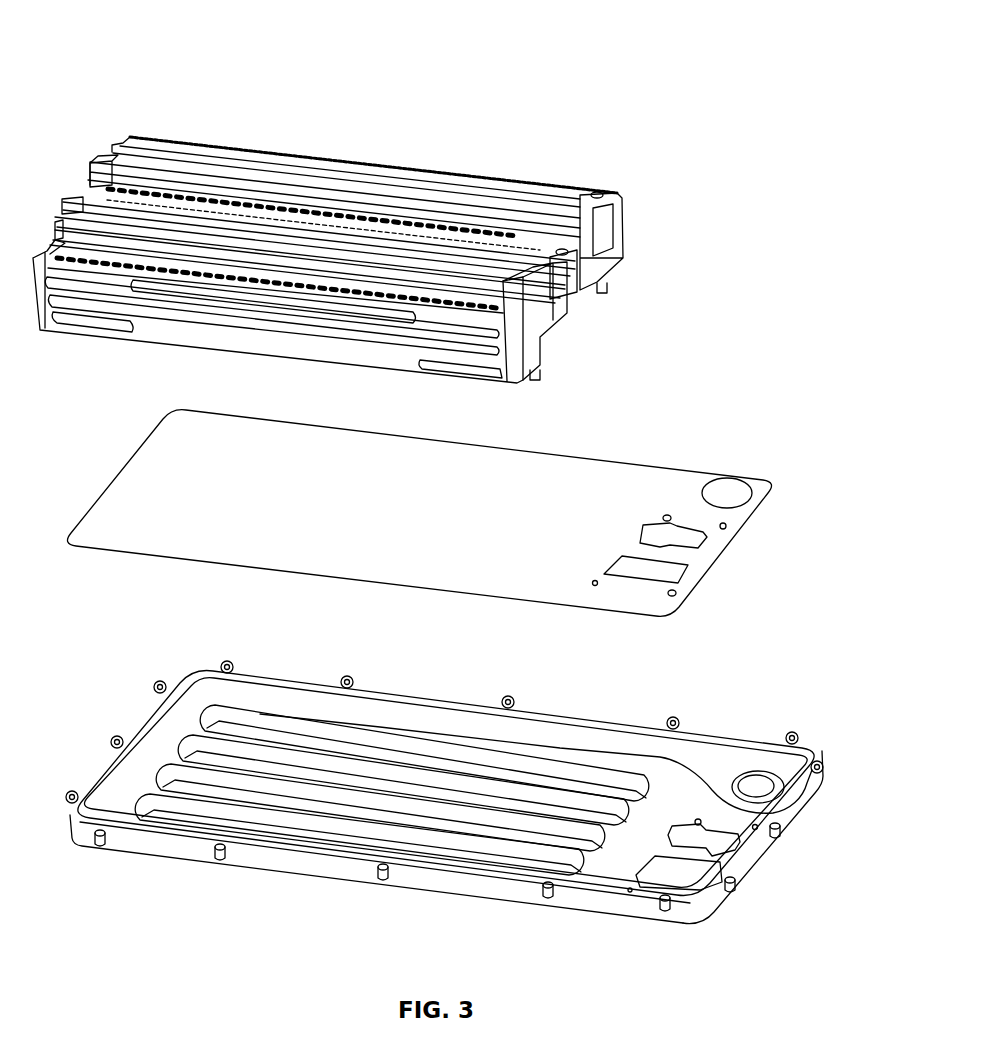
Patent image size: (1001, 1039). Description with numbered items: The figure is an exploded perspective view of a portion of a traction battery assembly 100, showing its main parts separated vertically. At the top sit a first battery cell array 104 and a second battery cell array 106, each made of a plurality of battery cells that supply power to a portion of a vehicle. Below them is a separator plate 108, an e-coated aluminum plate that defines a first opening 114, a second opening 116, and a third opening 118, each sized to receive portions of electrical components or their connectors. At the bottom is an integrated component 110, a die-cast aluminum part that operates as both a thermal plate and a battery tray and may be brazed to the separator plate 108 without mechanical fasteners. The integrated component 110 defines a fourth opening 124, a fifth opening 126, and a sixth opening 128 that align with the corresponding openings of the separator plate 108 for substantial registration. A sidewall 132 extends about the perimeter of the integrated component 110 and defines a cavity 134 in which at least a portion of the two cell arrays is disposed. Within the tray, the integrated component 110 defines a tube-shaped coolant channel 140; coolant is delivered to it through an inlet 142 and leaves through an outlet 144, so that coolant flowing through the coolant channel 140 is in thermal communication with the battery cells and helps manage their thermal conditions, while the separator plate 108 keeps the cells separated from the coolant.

The traction battery assembly 100 is at (150, 75).
The first battery cell array 104 is at (623, 222).
The second battery cell array 106 is at (565, 333).
The separator plate 108 is at (673, 465).
The integrated component 110 is at (720, 727).
The first opening 114 is at (730, 478).
The second opening 116 is at (703, 538).
The third opening 118 is at (677, 582).
The fourth opening 124 is at (812, 798).
The fifth opening 126 is at (762, 858).
The sixth opening 128 is at (687, 888).
The sidewall 132 is at (650, 722).
The cavity 134 is at (560, 733).
The coolant channel 140 is at (423, 750).
The inlet 142 is at (790, 815).
The outlet 144 is at (727, 893).